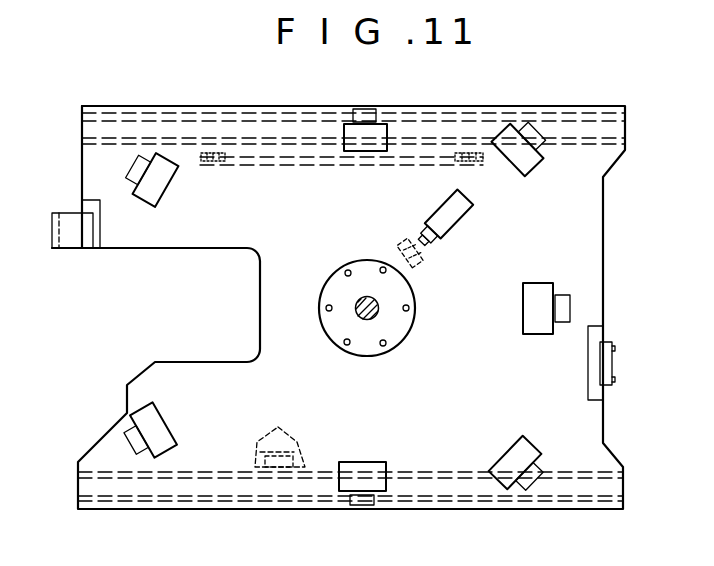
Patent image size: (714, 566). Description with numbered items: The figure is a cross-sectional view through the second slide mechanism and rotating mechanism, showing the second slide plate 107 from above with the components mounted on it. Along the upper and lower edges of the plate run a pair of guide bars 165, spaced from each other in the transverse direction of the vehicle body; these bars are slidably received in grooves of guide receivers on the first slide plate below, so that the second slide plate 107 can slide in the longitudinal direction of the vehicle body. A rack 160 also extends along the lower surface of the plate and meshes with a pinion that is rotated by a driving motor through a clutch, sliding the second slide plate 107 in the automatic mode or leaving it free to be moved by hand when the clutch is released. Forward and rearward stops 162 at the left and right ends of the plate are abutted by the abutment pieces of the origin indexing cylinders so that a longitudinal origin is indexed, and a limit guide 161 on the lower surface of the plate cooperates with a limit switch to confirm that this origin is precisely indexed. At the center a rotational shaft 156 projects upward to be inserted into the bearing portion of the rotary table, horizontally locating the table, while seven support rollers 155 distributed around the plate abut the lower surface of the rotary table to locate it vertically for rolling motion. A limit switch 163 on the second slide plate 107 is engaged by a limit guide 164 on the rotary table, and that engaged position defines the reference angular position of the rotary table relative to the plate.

The second slide plate 107 is at (577, 248).
The support rollers 155 is at (128, 172).
The hub 156 is at (367, 296).
The rack 160 is at (210, 140).
The limit guide 161 is at (257, 434).
The forward and rearward stops 162 is at (52, 240).
The limit switch 163 is at (455, 208).
The limit guide 164 is at (400, 240).
The guide bars 165 is at (122, 118).